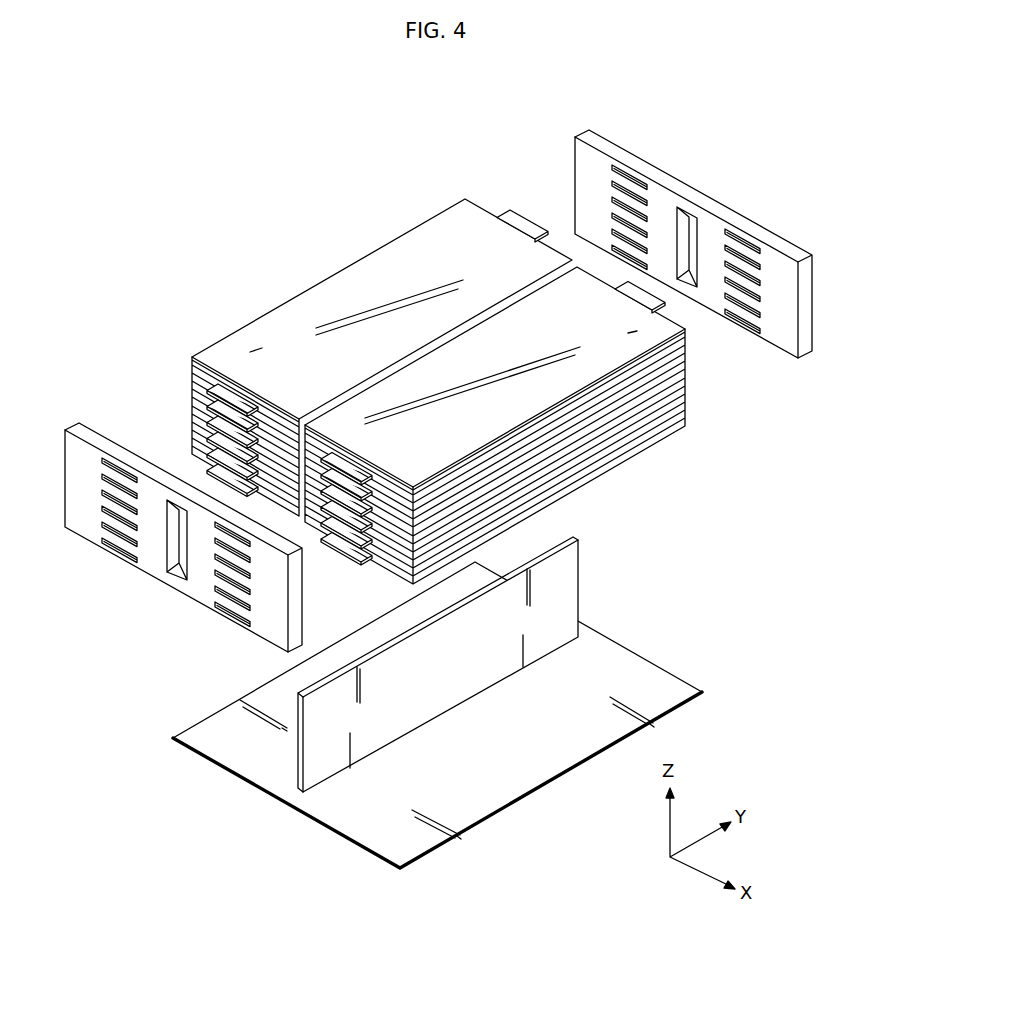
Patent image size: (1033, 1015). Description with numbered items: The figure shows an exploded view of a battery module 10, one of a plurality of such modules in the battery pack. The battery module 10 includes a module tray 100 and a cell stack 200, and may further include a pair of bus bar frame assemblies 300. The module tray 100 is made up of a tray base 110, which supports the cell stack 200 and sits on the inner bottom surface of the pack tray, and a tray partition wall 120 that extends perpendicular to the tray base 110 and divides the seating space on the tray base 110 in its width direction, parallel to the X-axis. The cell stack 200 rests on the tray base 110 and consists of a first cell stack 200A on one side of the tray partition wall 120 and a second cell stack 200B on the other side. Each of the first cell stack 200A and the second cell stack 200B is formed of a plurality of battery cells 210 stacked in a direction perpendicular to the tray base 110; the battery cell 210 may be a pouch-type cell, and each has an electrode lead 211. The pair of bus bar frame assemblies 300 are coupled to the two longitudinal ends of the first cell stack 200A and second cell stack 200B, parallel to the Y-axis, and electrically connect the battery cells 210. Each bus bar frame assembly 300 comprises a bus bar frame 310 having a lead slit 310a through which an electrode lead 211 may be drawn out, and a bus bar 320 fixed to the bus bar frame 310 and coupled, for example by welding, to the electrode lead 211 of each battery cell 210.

The battery module 10 is at (254, 141).
The module tray 100 is at (679, 560).
The tray base 110 is at (632, 677).
The tray partition wall 120 is at (563, 593).
The cell stack 200 is at (430, 391).
The first cell stack 200A is at (271, 288).
The second cell stack 200B is at (651, 460).
The battery cell 210 is at (397, 262).
The electrode lead 211 is at (205, 401).
The bus bar frame assembly 300 is at (708, 184).
The bus bar frame 310 is at (270, 620).
The lead slit 310a is at (236, 604).
The bus bar 320 is at (118, 526).